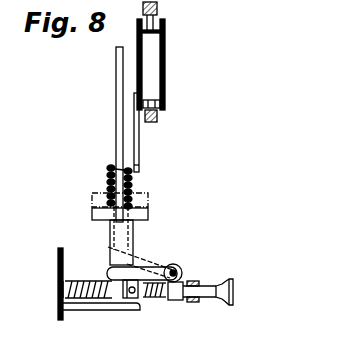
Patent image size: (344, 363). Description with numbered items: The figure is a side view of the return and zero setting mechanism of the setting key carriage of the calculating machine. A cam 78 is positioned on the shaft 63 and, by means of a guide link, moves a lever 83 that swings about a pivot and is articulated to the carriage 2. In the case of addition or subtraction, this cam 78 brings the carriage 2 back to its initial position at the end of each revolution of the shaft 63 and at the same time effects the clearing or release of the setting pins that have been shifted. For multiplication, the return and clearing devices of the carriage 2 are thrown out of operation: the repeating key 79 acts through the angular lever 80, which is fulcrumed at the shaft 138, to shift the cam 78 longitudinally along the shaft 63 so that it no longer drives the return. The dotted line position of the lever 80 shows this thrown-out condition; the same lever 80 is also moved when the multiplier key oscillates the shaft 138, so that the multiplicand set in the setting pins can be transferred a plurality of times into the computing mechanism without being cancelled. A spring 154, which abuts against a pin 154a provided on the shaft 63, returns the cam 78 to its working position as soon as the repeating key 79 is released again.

The carriage 2 is at (165, 73).
The shaft 63 is at (118, 97).
The lever 83 is at (140, 164).
The spring 154 is at (108, 189).
The pin 154a is at (108, 166).
The cam 78 is at (97, 221).
The angular lever 80 is at (150, 275).
The shaft 138 is at (174, 271).
The repeating key 79 is at (220, 287).